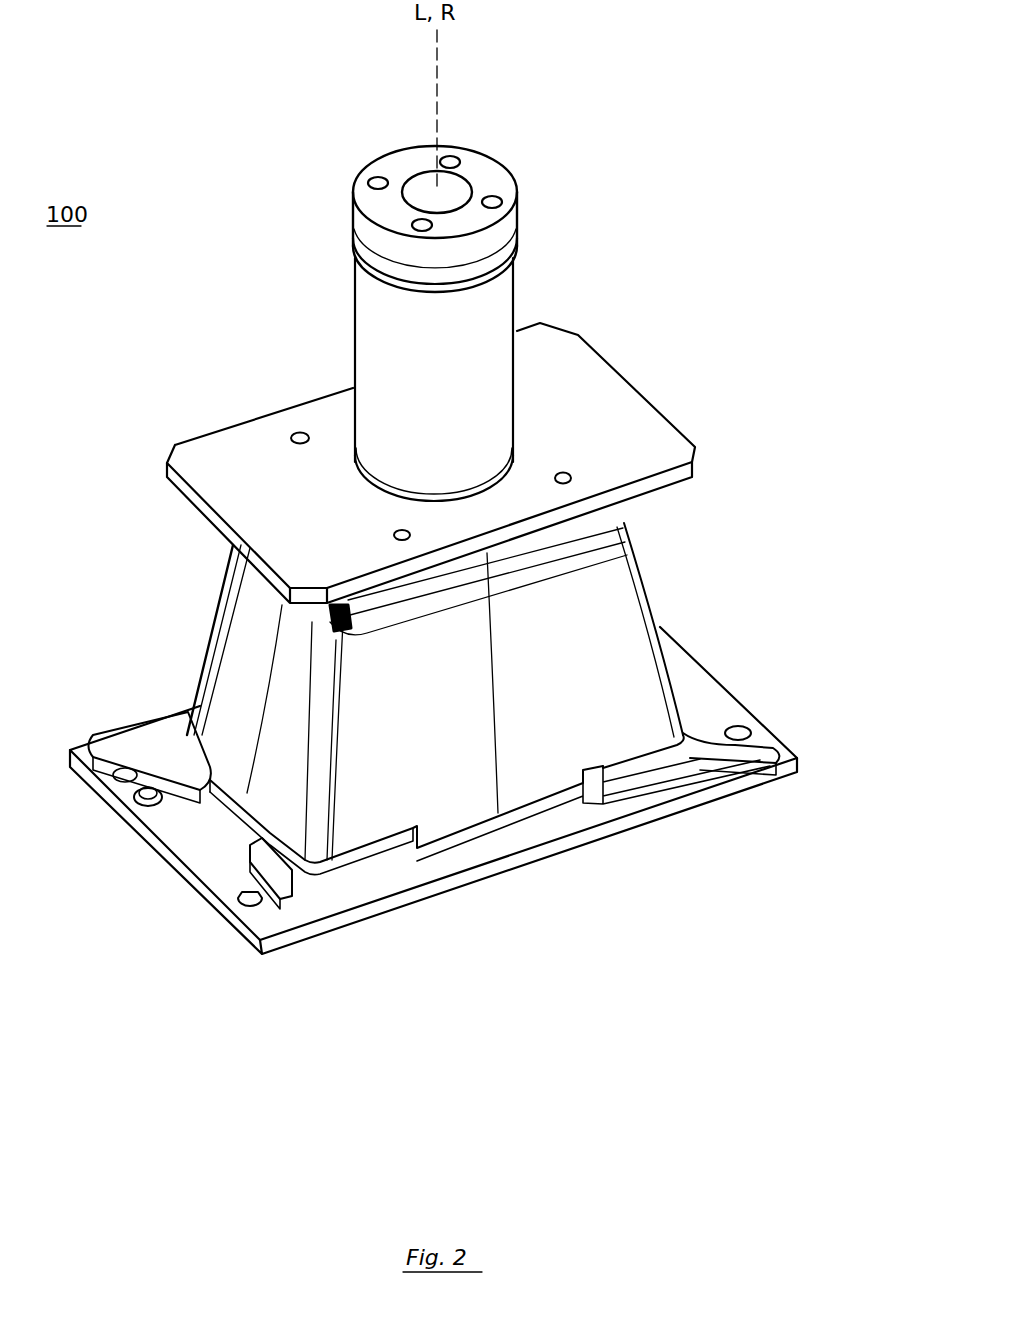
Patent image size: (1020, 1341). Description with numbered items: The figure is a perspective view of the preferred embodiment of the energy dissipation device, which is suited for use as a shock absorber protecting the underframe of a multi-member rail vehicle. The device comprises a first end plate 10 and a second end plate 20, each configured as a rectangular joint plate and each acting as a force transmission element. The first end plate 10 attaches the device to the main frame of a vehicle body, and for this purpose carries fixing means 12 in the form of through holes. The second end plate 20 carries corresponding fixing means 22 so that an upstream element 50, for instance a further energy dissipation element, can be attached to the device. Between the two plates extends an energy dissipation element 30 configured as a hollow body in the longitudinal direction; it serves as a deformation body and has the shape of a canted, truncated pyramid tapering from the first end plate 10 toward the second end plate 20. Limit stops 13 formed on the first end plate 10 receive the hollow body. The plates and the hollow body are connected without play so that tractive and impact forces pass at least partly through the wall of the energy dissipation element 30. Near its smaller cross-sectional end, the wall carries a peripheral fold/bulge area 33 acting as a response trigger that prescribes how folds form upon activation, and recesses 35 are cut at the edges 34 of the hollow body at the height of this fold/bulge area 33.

The first end plate 10 is at (433, 812).
The fixing means 12 is at (186, 977).
The limit stop 13 is at (812, 774).
The second end plate 20 is at (431, 409).
The fixing means 22 is at (627, 400).
The energy dissipation element 30 is at (502, 691).
The fold/bulge area 33 is at (574, 576).
The edge of the hollow body 34 is at (397, 765).
The recess 35 is at (195, 599).
The upstream element 50 is at (491, 323).